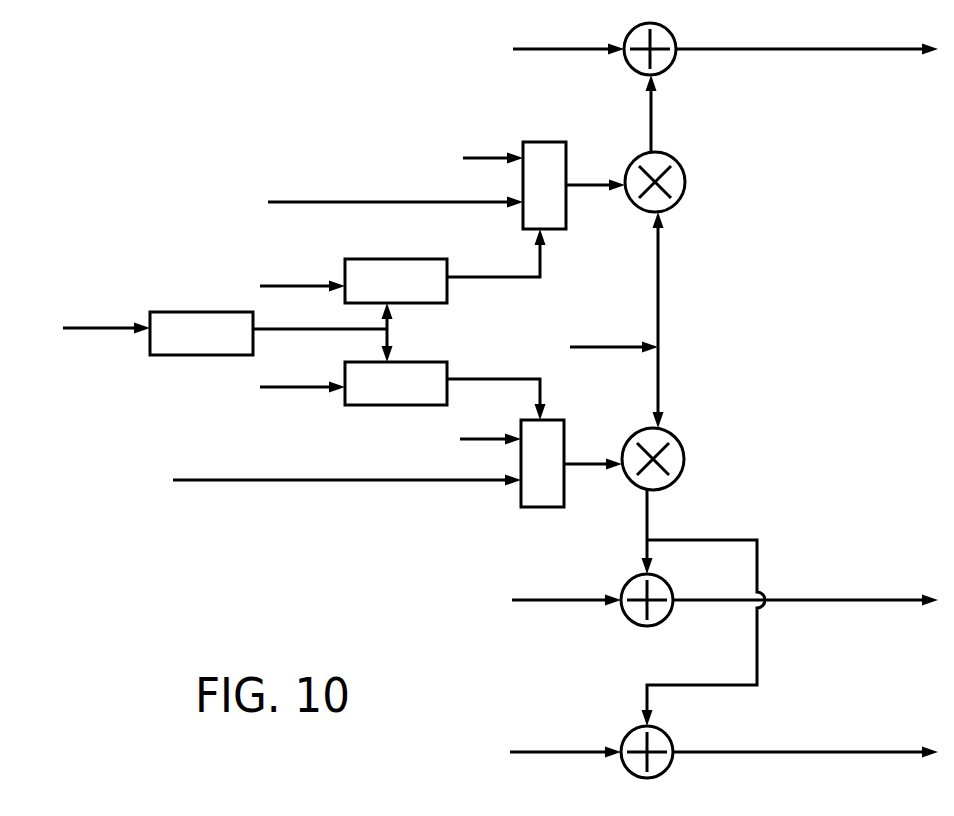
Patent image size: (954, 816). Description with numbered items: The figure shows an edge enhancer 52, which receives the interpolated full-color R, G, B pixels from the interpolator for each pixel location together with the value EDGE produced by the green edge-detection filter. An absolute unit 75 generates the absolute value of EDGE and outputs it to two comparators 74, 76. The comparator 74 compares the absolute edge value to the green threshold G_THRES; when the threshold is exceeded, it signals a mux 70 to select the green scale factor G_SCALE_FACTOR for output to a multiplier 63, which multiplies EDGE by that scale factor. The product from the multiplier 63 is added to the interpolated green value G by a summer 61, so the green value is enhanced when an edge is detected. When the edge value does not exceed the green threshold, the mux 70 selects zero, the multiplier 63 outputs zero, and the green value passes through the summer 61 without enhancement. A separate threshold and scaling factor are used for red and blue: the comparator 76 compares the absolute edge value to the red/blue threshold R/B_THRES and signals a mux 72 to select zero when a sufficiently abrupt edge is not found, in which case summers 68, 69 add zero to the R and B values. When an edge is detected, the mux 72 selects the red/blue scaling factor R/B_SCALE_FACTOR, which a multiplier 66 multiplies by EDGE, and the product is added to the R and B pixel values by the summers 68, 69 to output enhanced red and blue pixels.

The edge enhancer 52 is at (352, 632).
The summer 61 is at (676, 57).
The multiplier 63 is at (678, 206).
The multiplier 66 is at (678, 485).
The summer 68 is at (672, 608).
The summer 69 is at (672, 760).
The mux 70 is at (555, 141).
The mux 72 is at (533, 508).
The comparator 74 is at (448, 286).
The absolute unit 75 is at (254, 337).
The comparator 76 is at (448, 387).